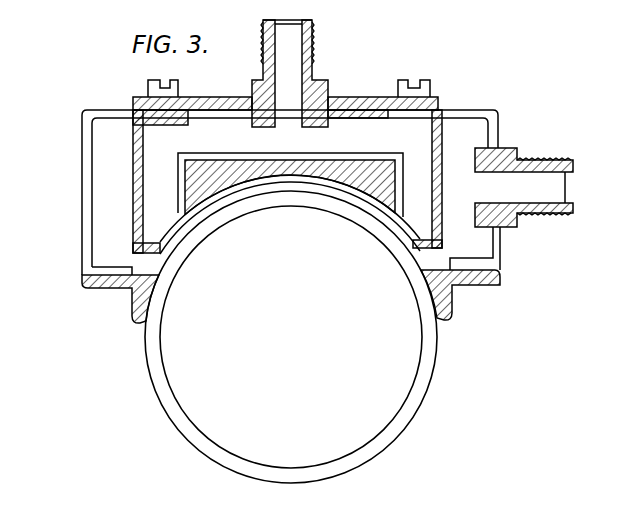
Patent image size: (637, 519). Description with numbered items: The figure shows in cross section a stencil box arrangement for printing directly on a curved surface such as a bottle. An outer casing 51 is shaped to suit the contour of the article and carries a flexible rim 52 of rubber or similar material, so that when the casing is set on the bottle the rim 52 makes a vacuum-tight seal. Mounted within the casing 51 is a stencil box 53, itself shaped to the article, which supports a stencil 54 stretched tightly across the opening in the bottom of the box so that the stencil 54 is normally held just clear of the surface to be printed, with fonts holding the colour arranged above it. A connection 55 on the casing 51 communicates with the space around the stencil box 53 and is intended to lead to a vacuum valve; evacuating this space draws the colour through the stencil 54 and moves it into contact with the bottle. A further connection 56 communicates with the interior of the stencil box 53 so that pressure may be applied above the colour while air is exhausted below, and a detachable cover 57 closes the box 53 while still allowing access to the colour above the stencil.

The outer casing 51 is at (82, 190).
The flexible rim 52 is at (132, 284).
The stencil box 53 is at (440, 138).
The stencil 54 is at (382, 212).
The connection 55 is at (538, 187).
The connection 56 is at (290, 62).
The detachable cover 57 is at (362, 96).